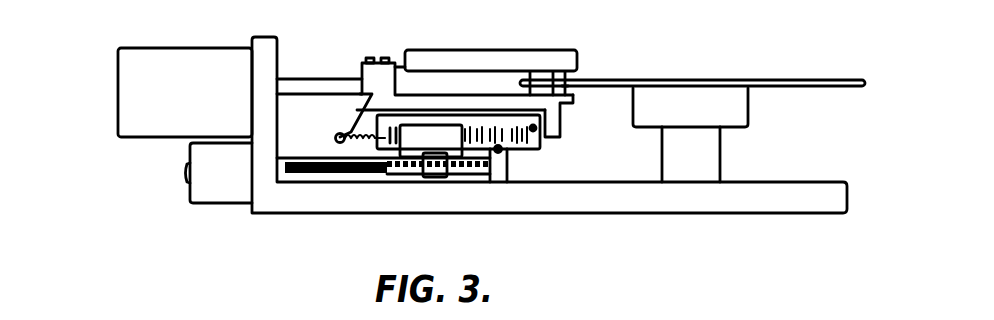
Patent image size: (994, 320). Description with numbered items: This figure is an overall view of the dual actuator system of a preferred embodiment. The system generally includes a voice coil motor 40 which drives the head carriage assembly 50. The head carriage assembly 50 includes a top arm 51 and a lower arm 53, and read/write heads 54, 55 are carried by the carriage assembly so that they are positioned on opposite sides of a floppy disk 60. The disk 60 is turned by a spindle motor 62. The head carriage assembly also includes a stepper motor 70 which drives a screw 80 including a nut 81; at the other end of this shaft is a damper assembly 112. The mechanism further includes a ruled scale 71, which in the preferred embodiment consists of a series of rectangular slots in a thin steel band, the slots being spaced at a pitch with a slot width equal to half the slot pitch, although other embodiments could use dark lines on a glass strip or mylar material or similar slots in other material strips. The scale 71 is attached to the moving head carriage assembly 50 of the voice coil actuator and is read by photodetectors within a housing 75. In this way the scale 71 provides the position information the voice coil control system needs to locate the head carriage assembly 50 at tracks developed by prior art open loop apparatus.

The voice coil motor 40 is at (104, 82).
The head carriage assembly 50 is at (426, 28).
The top arm 51 is at (513, 60).
The lower arm 53 is at (577, 102).
The read/write head 54 is at (552, 72).
The read/write head 55 is at (567, 84).
The floppy disk 60 is at (853, 88).
The spindle motor 62 is at (703, 157).
The stepper motor 70 is at (207, 186).
The scale 71 is at (530, 152).
The housing 75 is at (448, 145).
The screw 80 is at (481, 156).
The nut 81 is at (422, 178).
The damper assembly 112 is at (185, 172).